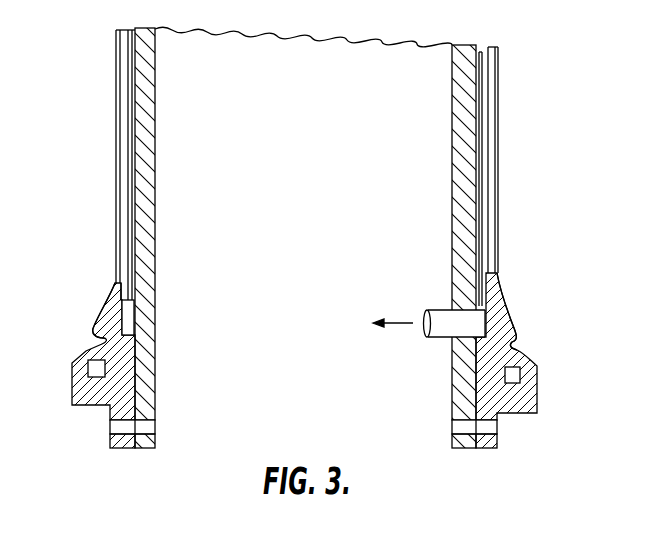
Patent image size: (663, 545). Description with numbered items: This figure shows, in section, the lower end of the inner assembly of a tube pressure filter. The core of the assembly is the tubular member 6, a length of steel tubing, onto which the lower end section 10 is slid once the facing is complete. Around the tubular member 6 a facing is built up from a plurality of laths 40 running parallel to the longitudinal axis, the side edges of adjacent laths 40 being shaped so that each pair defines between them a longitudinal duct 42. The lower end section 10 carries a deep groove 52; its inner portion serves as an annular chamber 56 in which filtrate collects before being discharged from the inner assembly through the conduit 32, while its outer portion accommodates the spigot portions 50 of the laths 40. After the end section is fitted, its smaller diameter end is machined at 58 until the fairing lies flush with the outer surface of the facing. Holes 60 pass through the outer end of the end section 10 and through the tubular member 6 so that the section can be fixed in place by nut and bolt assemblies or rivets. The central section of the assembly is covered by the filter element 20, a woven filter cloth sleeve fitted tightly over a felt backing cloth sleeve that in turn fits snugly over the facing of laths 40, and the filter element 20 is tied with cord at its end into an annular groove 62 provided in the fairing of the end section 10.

The tubular member 6 is at (468, 44).
The lower end section 10 is at (537, 366).
The filter element 20 is at (499, 150).
The conduit 32 is at (423, 328).
The laths 40 is at (499, 76).
The longitudinal duct 42 is at (483, 108).
The spigot portions 50 is at (115, 283).
The deep groove 52 is at (130, 298).
The annular chamber 56 is at (128, 323).
The machined portion 58 is at (496, 273).
The holes 60 is at (483, 431).
The annular groove 62 is at (510, 347).